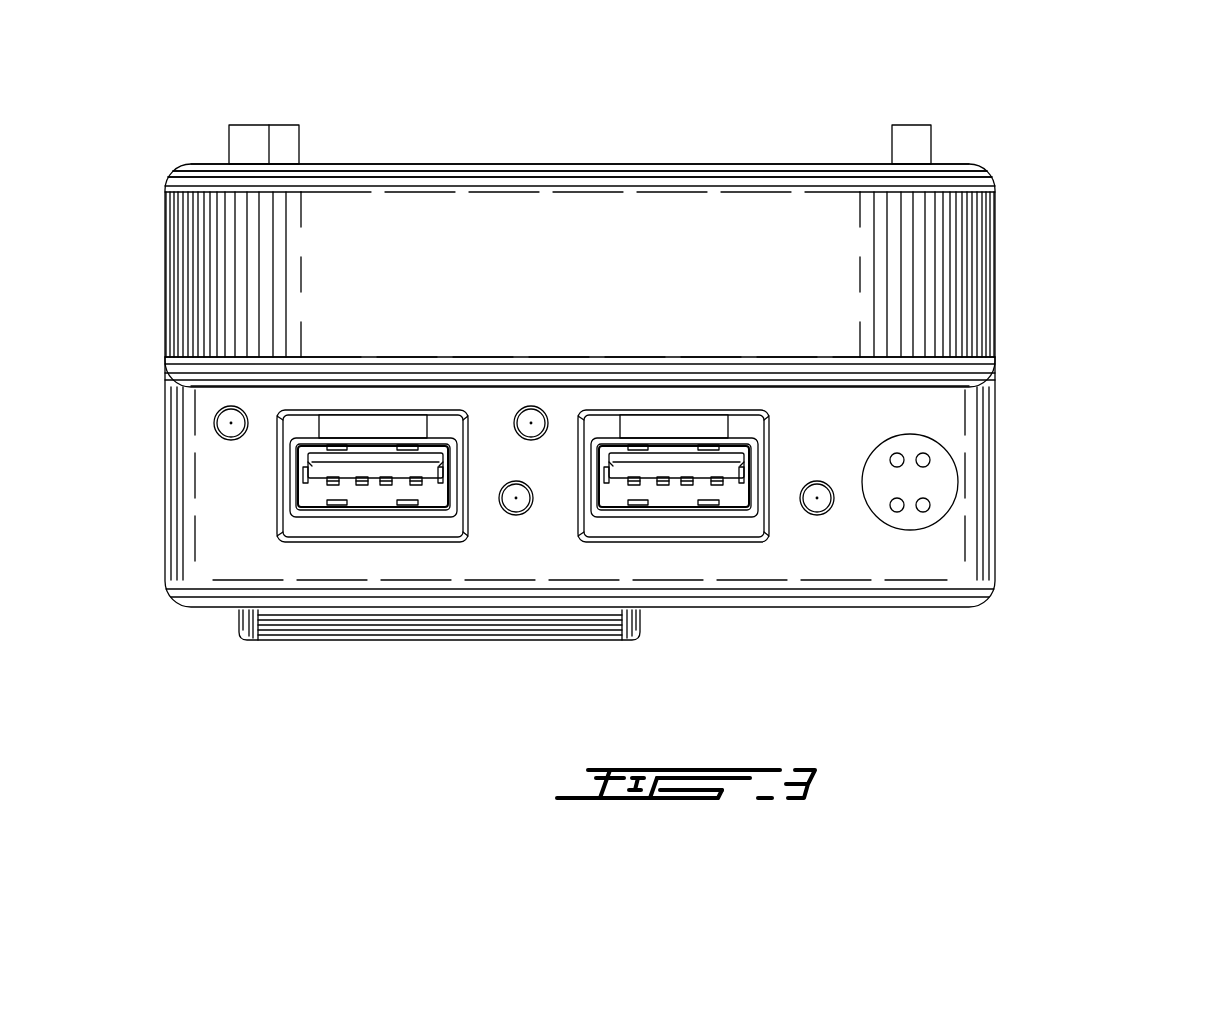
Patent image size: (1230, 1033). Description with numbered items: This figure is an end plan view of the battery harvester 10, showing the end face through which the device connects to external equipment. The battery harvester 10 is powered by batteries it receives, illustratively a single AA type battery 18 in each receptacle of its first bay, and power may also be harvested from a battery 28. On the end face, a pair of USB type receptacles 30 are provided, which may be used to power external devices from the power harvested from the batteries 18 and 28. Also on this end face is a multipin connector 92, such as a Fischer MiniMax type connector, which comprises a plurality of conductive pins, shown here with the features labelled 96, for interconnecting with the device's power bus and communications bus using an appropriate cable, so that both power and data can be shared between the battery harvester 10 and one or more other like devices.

The battery harvester 10 is at (1050, 270).
The AA type battery 18 is at (582, 163).
The battery 28 is at (323, 640).
The USB type receptacles 30 is at (674, 513).
The multipin connector 92 is at (870, 512).
The connector pins 96 is at (923, 512).